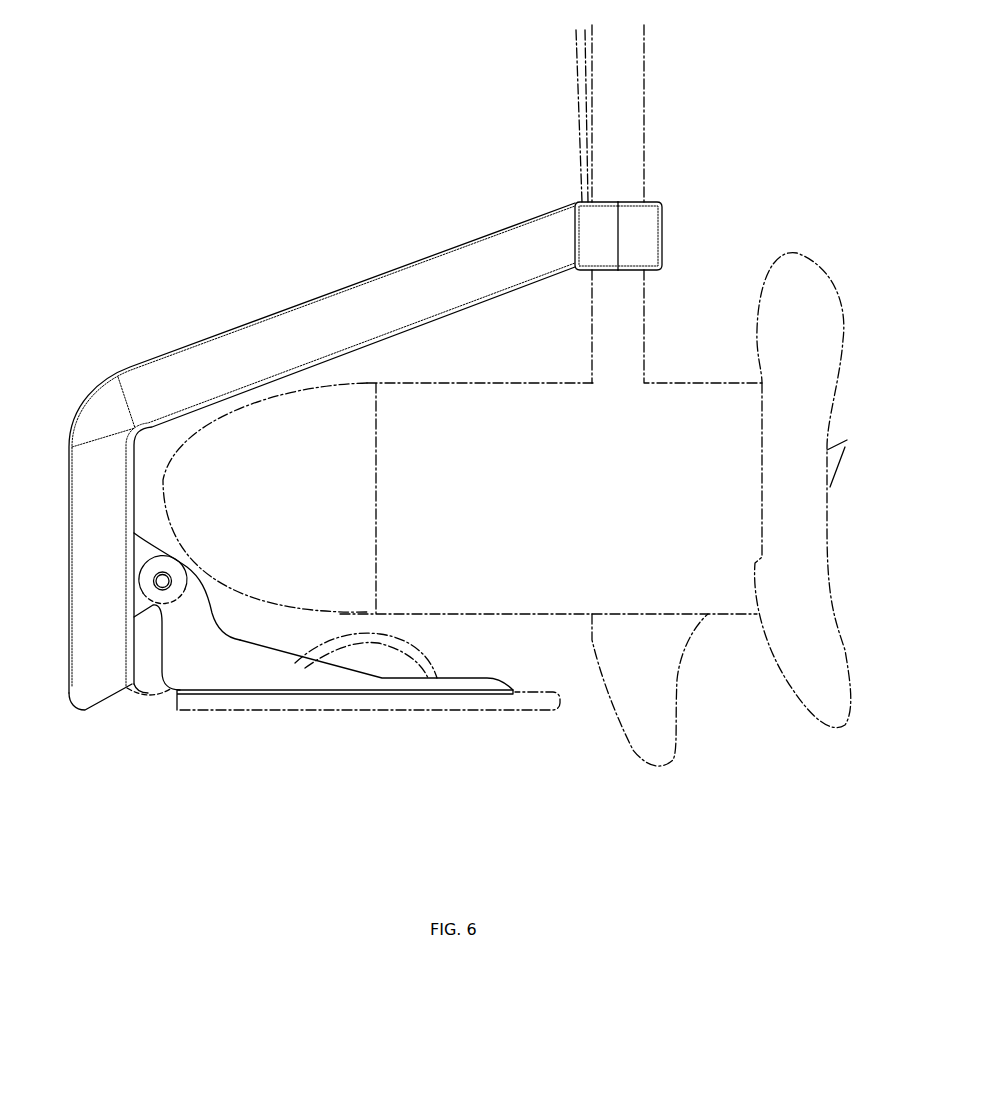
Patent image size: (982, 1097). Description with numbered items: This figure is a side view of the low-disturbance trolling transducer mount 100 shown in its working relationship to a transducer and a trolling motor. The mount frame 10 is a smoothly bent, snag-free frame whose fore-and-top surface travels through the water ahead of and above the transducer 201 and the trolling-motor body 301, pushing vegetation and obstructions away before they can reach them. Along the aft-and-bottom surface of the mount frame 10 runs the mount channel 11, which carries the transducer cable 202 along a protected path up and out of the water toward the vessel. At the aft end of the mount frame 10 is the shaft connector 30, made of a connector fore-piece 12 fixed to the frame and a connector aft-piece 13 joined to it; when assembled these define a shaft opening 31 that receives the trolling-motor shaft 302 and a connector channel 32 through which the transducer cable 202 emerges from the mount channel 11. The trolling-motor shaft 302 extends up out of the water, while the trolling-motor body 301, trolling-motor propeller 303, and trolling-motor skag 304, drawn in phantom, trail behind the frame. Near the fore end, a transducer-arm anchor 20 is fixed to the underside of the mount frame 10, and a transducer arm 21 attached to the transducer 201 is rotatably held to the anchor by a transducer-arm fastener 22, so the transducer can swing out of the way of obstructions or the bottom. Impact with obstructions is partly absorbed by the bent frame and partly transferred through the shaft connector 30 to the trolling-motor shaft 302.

The low-disturbance trolling transducer mount 100 is at (238, 98).
The mount frame 10 is at (142, 378).
The mount channel 11 is at (388, 338).
The connector fore-piece 12 is at (592, 256).
The connector aft-piece 13 is at (648, 255).
The transducer-arm anchor 20 is at (143, 552).
The transducer arm 21 is at (240, 643).
The transducer-arm fastener 22 is at (153, 583).
The shaft connector 30 is at (575, 308).
The shaft opening 31 is at (647, 198).
The connector channel 32 is at (582, 202).
The transducer 201 is at (467, 703).
The transducer cable 202 is at (155, 695).
The trolling-motor body 301 is at (520, 595).
The trolling-motor shaft 302 is at (628, 65).
The trolling-motor propeller 303 is at (779, 358).
The trolling-motor skag 304 is at (668, 667).